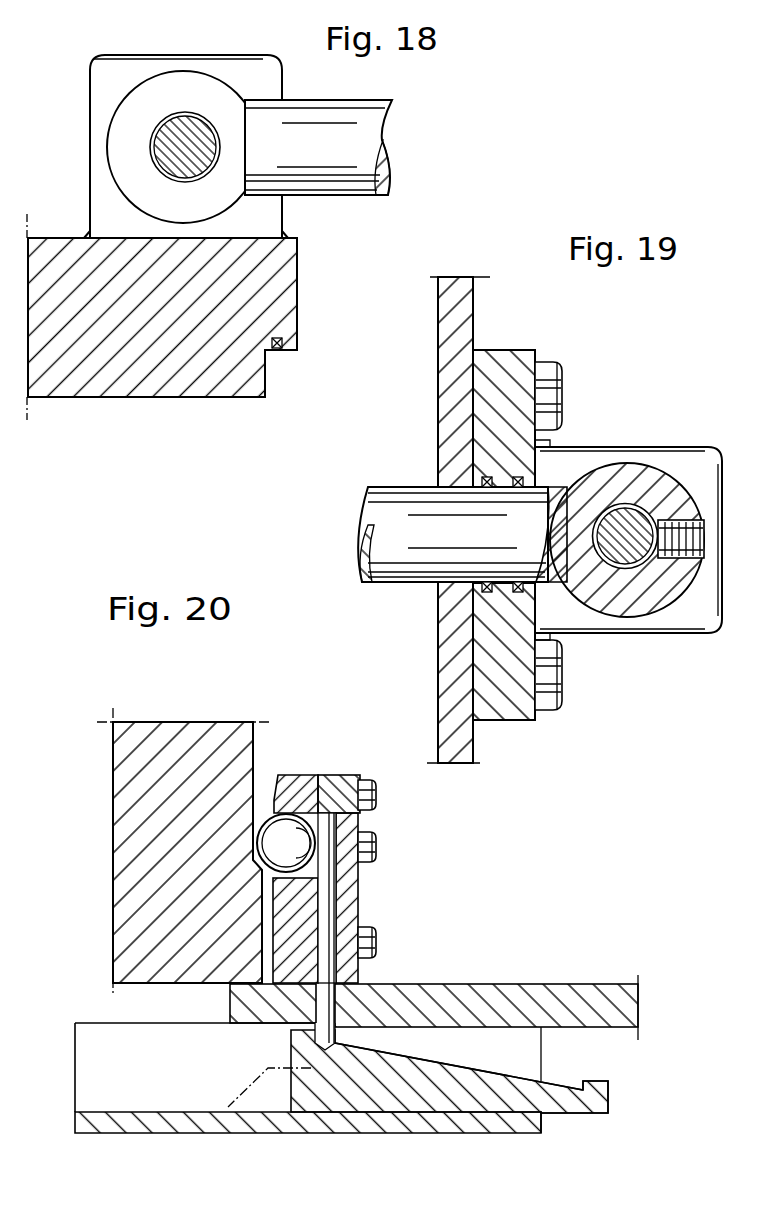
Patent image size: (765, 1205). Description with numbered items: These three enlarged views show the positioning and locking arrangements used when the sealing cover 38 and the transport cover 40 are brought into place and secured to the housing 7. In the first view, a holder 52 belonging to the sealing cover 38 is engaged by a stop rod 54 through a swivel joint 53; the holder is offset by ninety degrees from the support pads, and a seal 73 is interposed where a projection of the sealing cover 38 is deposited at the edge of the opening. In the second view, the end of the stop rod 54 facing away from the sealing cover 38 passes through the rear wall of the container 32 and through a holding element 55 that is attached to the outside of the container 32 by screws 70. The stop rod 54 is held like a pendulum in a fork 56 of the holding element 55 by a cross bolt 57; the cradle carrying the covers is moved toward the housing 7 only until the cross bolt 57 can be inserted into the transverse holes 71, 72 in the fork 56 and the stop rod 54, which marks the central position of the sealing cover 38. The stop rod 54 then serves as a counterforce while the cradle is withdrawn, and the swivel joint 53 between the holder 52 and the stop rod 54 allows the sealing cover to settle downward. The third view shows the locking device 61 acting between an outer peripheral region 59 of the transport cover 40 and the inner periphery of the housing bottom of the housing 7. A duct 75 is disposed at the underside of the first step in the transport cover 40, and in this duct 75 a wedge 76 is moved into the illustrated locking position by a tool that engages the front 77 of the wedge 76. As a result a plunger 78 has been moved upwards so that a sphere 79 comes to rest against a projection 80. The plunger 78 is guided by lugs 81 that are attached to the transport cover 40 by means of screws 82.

In FIG. 20, the housing 7 is at (160, 737).
In FIG. 19, the container 32 is at (460, 745).
In FIG. 18, the sealing cover 38 is at (157, 382).
In FIG. 20, the transport cover 40 is at (377, 993).
In FIG. 18, the holder 52 is at (262, 215).
In FIG. 18, the swivel joint 53 is at (152, 162).
In FIG. 18, the stop rod 54 is at (350, 117).
In FIG. 19, the holding element 55 is at (482, 363).
In FIG. 19, the fork 56 is at (568, 613).
In FIG. 19, the cross bolt 57 is at (628, 562).
In FIG. 20, the outer peripheral region 59 is at (266, 800).
In FIG. 20, the locking device 61 is at (337, 768).
In FIG. 19, the screws 70 is at (548, 370).
In FIG. 19, the transverse hole 71 is at (628, 503).
In FIG. 19, the transverse hole 72 is at (681, 539).
In FIG. 18, the seal 73 is at (284, 344).
In FIG. 20, the duct 75 is at (533, 1128).
In FIG. 20, the wedge 76 is at (548, 1081).
In FIG. 20, the front 77 is at (208, 1134).
In FIG. 20, the plunger 78 is at (327, 910).
In FIG. 20, the sphere 79 is at (290, 842).
In FIG. 20, the projection 80 is at (258, 866).
In FIG. 20, the lugs 81 is at (347, 807).
In FIG. 20, the screws 82 is at (367, 942).